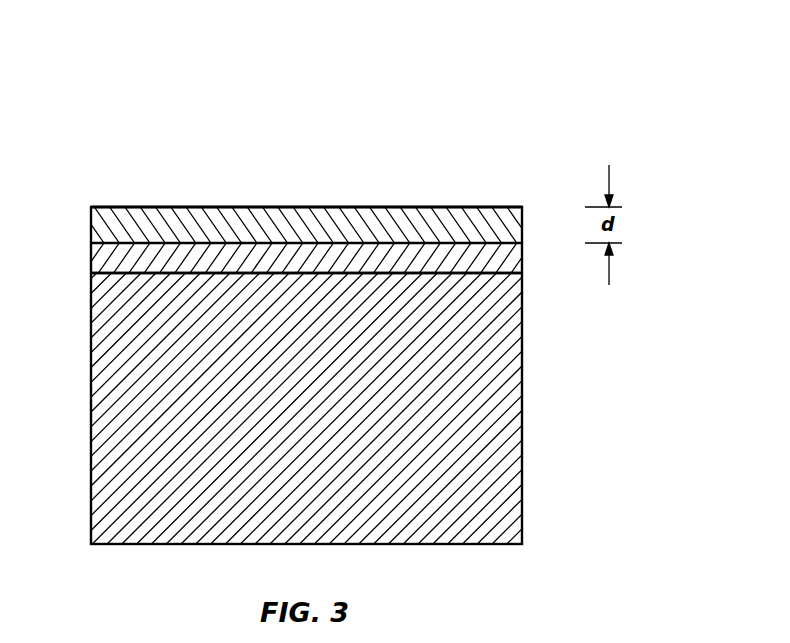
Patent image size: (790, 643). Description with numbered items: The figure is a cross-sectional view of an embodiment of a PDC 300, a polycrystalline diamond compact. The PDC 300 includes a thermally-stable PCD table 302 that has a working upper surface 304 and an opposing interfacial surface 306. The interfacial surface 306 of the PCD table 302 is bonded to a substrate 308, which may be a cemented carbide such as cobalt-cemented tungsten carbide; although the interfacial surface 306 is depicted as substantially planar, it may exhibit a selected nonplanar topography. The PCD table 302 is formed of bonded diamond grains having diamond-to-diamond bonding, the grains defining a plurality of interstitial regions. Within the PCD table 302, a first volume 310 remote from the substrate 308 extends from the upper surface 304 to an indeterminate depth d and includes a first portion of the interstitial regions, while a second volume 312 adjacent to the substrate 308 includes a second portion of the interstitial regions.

The PDC 300 is at (533, 103).
The thermally-stable PCD table 302 is at (83, 208).
The working upper surface 304 is at (385, 207).
The interfacial surface 306 is at (493, 273).
The substrate 308 is at (522, 404).
The first volume 310 is at (527, 208).
The second volume 312 is at (527, 244).